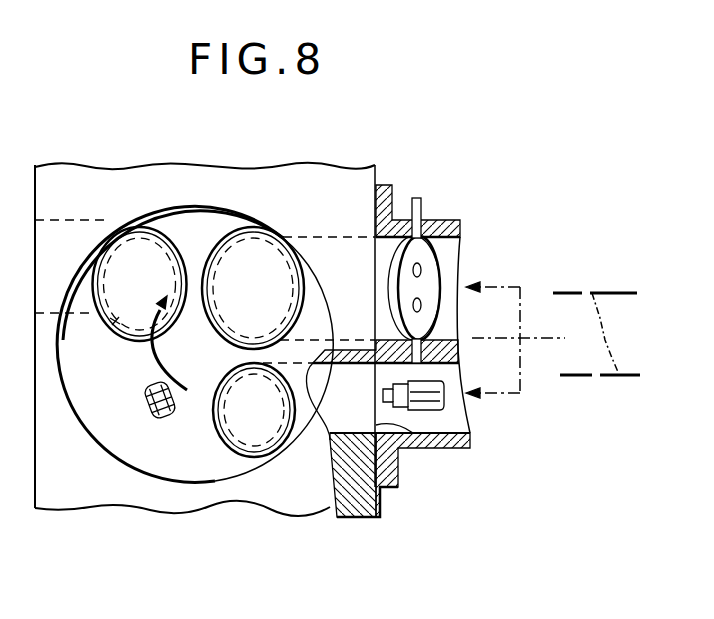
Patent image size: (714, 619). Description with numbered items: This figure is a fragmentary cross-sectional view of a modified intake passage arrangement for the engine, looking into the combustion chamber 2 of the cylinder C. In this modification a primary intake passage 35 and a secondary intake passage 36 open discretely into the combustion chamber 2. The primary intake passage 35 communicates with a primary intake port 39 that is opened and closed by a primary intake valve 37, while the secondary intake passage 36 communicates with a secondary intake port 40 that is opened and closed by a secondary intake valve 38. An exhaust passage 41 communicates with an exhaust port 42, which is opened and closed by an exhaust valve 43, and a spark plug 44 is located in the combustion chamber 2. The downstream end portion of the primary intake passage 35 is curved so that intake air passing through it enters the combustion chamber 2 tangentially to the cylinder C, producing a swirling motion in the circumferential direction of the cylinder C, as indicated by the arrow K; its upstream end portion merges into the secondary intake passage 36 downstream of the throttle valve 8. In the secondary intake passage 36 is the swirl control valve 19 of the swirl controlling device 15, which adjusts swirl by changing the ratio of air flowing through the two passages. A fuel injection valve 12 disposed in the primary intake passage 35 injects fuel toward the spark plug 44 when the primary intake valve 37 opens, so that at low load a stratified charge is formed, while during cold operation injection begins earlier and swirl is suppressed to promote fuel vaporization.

The combustion chamber 2 is at (107, 425).
The throttle valve 8 is at (604, 372).
The fuel injection valve 12 is at (443, 400).
The swirl controlling device 15 is at (423, 178).
The swirl control valve 19 is at (436, 256).
The primary intake passage 35 is at (408, 448).
The secondary intake passage 36 is at (453, 267).
The primary intake valve 37 is at (214, 433).
The secondary intake valve 38 is at (219, 241).
The primary intake port 39 is at (256, 450).
The secondary intake port 40 is at (310, 248).
The exhaust passage 41 is at (52, 235).
The exhaust port 42 is at (102, 322).
The exhaust valve 43 is at (161, 231).
The spark plug 44 is at (149, 398).
The cylinder C is at (191, 482).
The arrow K is at (169, 343).